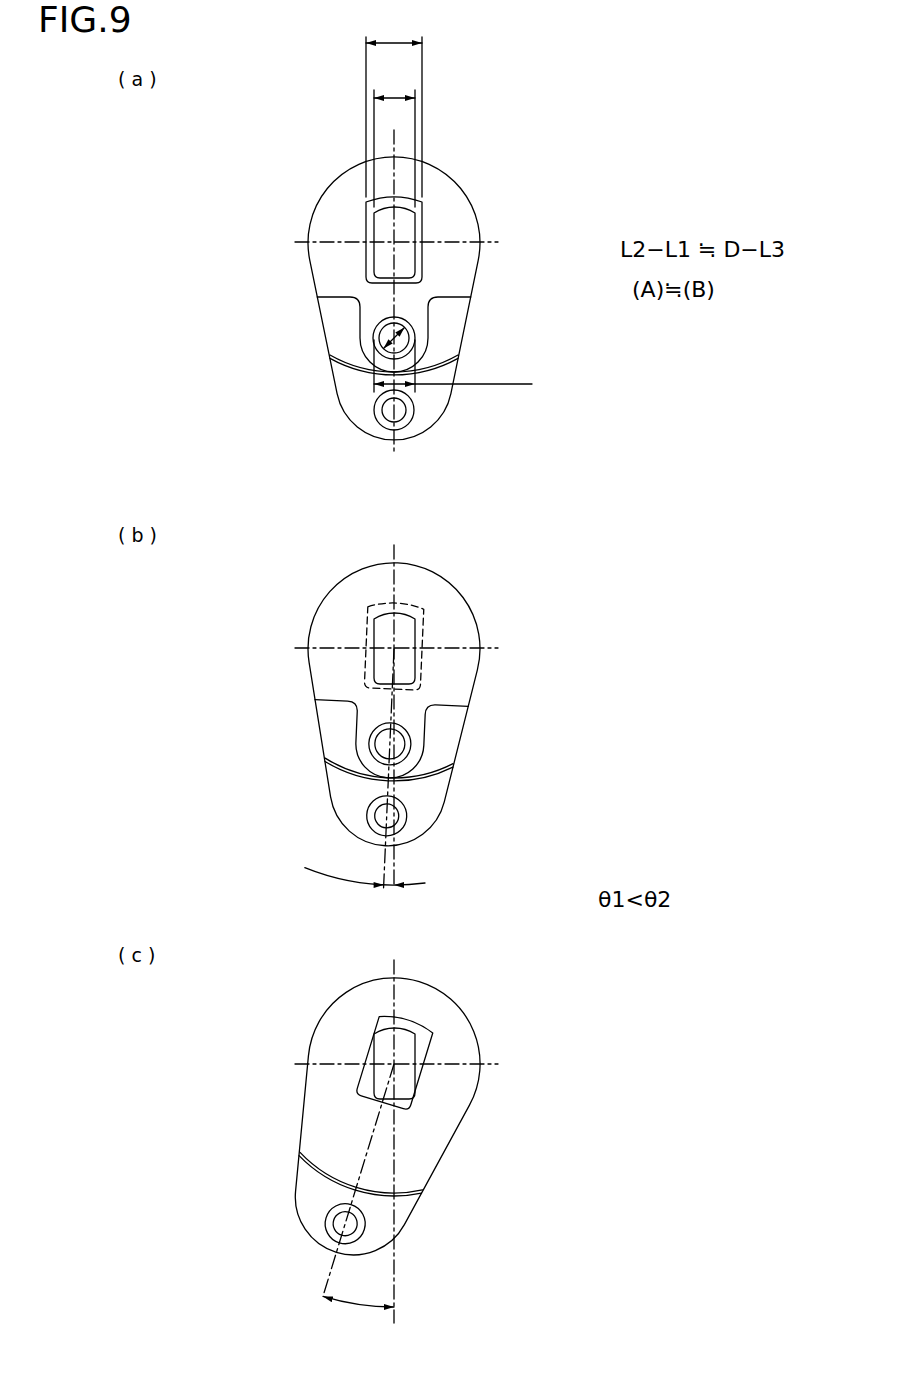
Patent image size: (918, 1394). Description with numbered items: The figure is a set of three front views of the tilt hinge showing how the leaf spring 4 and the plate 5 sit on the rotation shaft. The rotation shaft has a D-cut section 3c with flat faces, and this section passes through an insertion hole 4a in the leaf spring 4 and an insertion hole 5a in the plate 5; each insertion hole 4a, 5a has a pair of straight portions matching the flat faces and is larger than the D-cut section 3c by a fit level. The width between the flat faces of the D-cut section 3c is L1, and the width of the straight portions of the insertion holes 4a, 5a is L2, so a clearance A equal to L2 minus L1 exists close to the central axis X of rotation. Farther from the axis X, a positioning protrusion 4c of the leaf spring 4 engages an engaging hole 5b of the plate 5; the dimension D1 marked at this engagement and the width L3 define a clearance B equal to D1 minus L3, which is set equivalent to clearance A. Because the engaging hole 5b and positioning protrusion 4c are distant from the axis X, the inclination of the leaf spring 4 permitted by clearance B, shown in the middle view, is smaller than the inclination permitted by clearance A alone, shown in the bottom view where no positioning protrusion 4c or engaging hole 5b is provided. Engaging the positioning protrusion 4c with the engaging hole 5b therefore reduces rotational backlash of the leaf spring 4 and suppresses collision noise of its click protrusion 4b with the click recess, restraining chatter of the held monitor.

The D-cut section 3c is at (405, 225).
The leaf spring 4 is at (455, 322).
The insertion hole 4a is at (441, 620).
The click protrusion 4b is at (383, 420).
The positioning protrusion 4c is at (378, 338).
The plate 5 is at (460, 270).
The insertion hole 5a is at (408, 203).
The engaging hole 5b is at (383, 327).
The central axis of rotation X is at (394, 241).
The width between flat faces L1 is at (394, 137).
The width of straight portions L2 is at (394, 106).
The width L3 is at (453, 366).
The clearance dimension D D1 is at (384, 348).